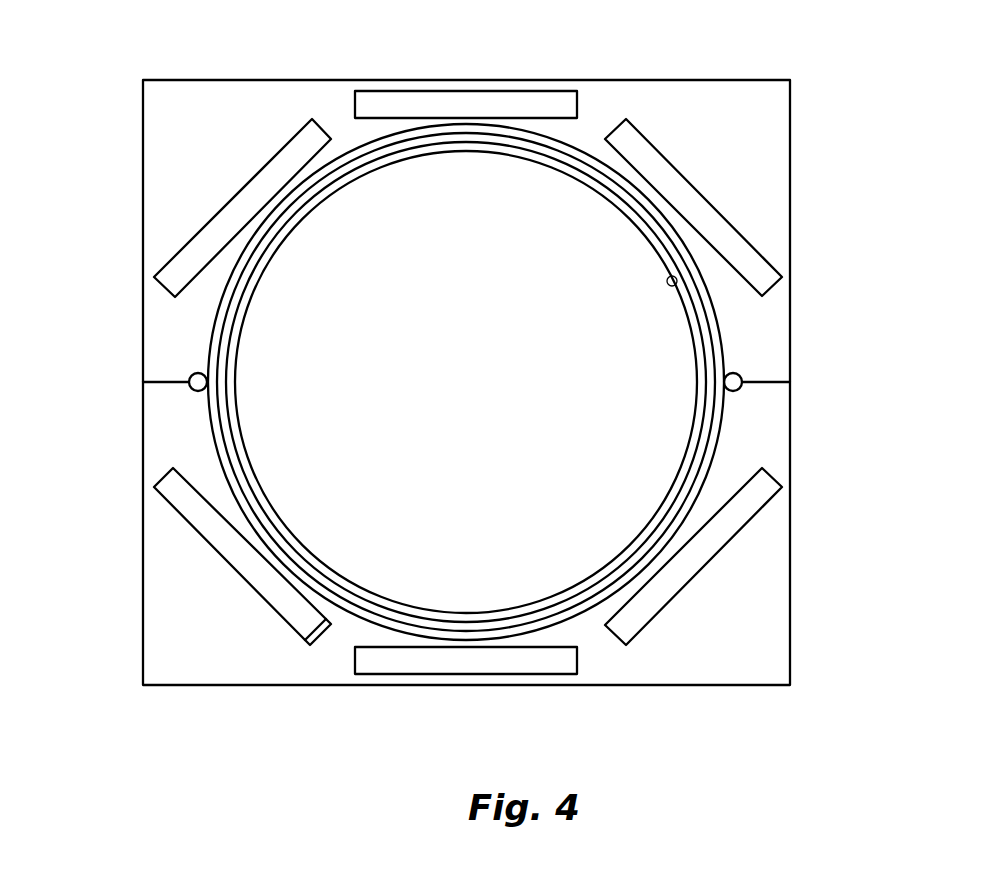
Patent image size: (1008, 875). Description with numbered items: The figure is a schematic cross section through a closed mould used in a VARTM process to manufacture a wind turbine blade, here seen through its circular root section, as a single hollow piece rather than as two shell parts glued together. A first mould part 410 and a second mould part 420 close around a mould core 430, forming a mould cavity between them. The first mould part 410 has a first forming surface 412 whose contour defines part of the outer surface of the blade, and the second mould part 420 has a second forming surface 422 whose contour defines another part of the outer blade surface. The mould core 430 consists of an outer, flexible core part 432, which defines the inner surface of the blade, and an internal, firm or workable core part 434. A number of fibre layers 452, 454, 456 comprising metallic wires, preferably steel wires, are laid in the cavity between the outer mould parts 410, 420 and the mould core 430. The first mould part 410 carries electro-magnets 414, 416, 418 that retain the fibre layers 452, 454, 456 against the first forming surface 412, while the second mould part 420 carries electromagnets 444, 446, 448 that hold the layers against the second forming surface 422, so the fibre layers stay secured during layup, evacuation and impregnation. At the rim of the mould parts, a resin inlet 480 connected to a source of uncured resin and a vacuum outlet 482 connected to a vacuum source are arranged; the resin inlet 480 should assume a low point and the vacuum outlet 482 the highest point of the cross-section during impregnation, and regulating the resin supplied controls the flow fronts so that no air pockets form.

The first mould part 410 is at (680, 672).
The first forming surface 412 is at (553, 624).
The electro-magnet 414 is at (205, 528).
The electro-magnet 416 is at (490, 663).
The electro-magnet 418 is at (702, 545).
The second mould part 420 is at (466, 386).
The second forming surface 422 is at (537, 399).
The mould core 430 is at (551, 445).
The outer, flexible core part 432 is at (678, 288).
The internal core part 434 is at (550, 445).
The electromagnet 444 is at (182, 267).
The electromagnet 446 is at (372, 106).
The electromagnet 448 is at (635, 150).
The fibre layer 452 is at (330, 620).
The fibre layer 454 is at (370, 605).
The fibre layer 456 is at (410, 612).
The resin inlet 480 is at (200, 390).
The vacuum outlet 482 is at (735, 385).